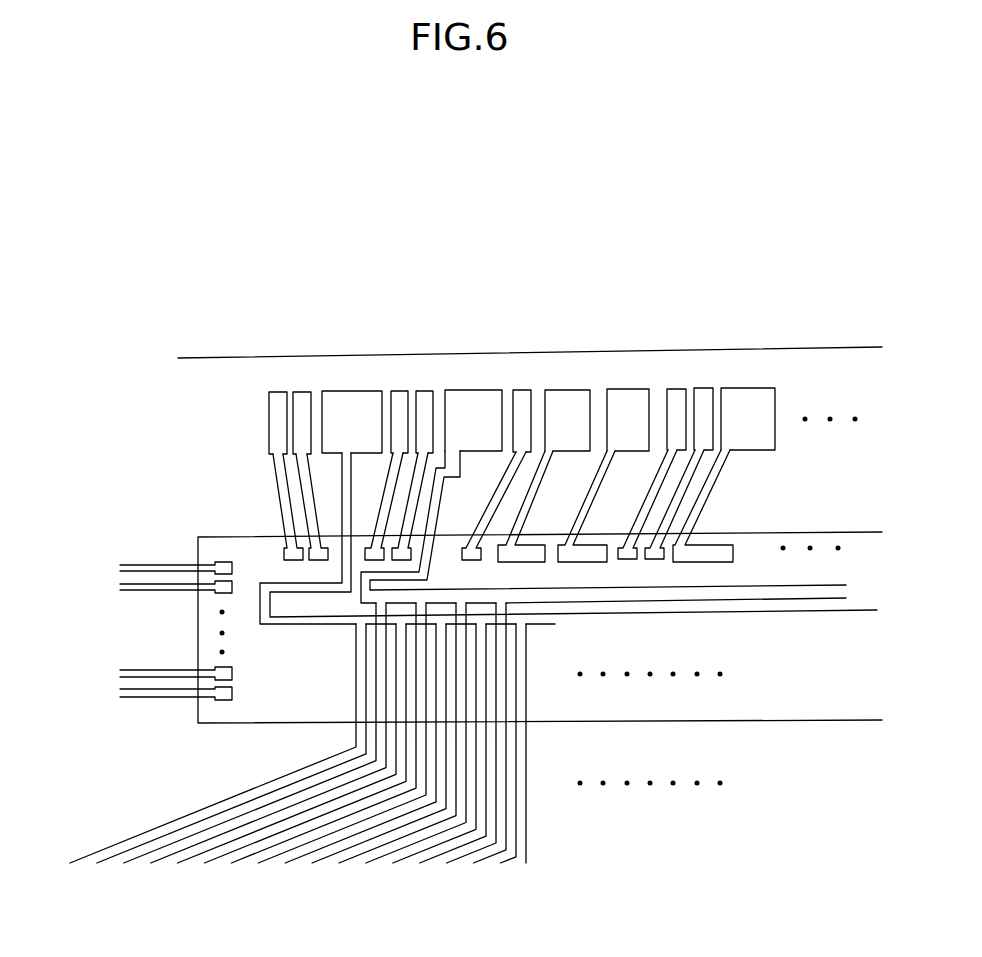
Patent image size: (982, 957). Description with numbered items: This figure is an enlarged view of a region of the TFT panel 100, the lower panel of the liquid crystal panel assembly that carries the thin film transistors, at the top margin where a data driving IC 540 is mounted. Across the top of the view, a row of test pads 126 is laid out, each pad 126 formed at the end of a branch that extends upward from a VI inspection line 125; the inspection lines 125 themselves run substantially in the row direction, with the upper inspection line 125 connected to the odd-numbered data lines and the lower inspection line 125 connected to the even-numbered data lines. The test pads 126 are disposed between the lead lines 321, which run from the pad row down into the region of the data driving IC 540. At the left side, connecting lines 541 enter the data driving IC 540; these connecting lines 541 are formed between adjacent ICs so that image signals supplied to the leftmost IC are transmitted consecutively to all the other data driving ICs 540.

The TFT panel 100 is at (617, 341).
The test pad 126 is at (357, 408).
The lead line 321 is at (277, 478).
The VI inspection line 125 is at (288, 626).
The data driving IC 540 is at (187, 722).
The connecting line 541 is at (138, 563).